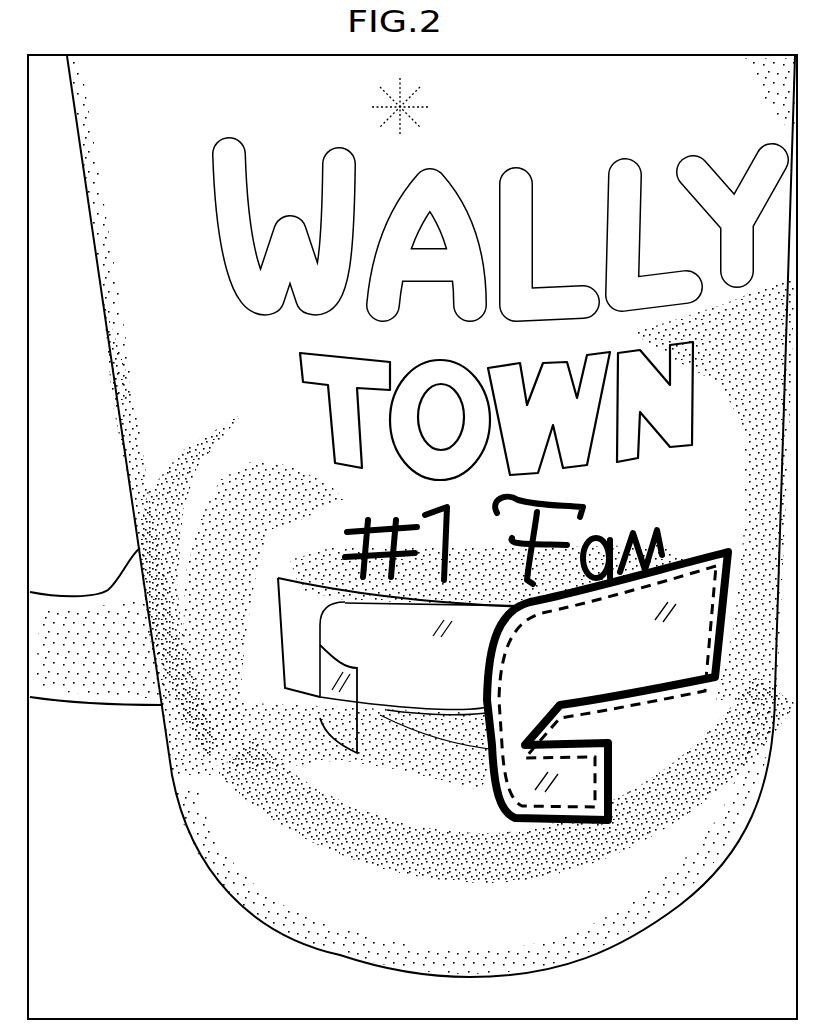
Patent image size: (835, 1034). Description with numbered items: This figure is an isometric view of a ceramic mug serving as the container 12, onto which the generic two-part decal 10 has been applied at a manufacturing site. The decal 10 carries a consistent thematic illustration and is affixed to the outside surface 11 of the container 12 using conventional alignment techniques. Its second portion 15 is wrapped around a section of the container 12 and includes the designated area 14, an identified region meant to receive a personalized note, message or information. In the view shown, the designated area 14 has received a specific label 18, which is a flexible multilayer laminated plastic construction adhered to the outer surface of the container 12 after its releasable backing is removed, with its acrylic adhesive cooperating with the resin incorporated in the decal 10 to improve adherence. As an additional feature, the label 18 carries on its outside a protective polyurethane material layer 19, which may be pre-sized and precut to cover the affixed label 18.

The decal 10 is at (185, 440).
The outside surface 11 is at (128, 473).
The container 12 is at (118, 503).
The designated area 14 is at (278, 648).
The second portion 15 is at (167, 345).
The label 18 is at (388, 642).
The polyurethane material layer 19 is at (668, 650).